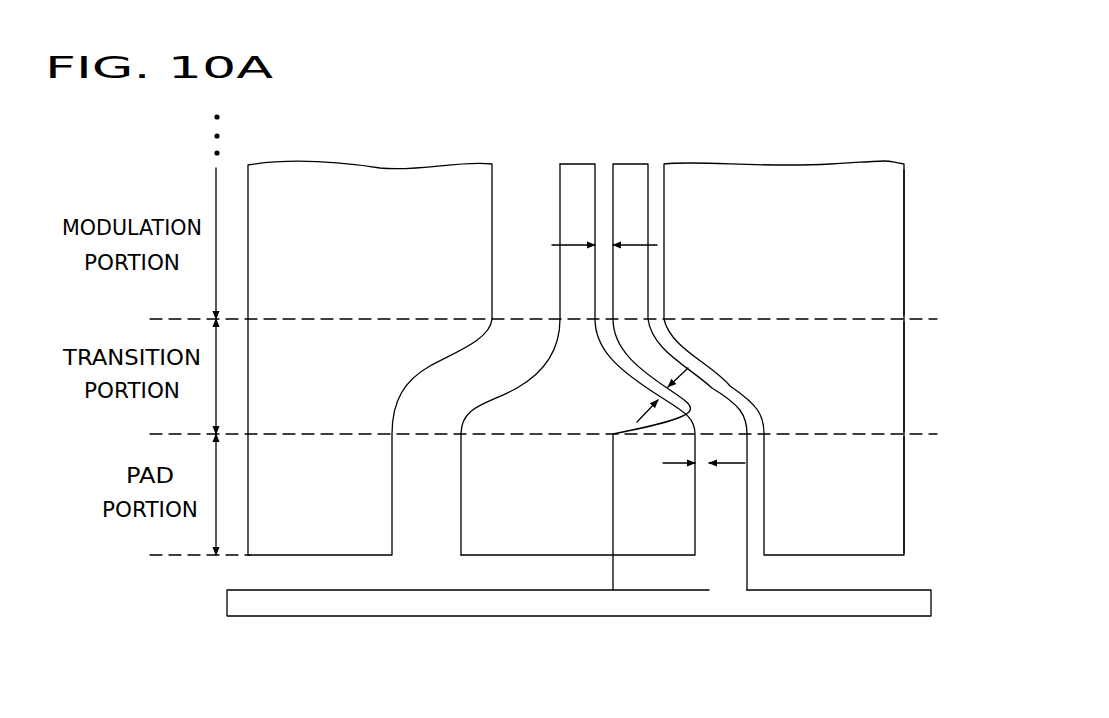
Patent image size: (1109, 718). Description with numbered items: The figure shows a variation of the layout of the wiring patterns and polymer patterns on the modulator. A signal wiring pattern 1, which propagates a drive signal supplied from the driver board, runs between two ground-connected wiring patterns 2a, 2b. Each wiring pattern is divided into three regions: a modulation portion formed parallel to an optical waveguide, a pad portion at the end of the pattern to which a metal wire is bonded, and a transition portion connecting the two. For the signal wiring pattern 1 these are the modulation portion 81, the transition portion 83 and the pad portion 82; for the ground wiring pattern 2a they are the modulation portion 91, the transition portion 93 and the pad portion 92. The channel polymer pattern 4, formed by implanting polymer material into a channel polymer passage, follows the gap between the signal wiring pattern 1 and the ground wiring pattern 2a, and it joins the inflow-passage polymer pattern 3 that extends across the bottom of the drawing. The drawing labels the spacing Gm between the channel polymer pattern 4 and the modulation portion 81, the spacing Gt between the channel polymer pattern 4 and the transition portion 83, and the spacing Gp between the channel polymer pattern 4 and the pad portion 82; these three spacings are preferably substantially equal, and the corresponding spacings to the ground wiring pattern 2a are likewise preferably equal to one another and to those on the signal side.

The wiring pattern 1 is at (587, 165).
The wiring pattern 2a is at (785, 168).
The wiring pattern 2b is at (370, 168).
The inflow-passage polymer pattern 3 is at (543, 605).
The channel polymer pattern 4 is at (745, 500).
The modulation portion 81 is at (578, 207).
The pad portion 82 is at (473, 481).
The transition portion 83 is at (540, 392).
The modulation portion 91 is at (890, 273).
The pad portion 92 is at (890, 530).
The transition portion 93 is at (890, 400).
The spacing Gm is at (575, 247).
The spacing Gt is at (637, 422).
The spacing Gp is at (663, 463).